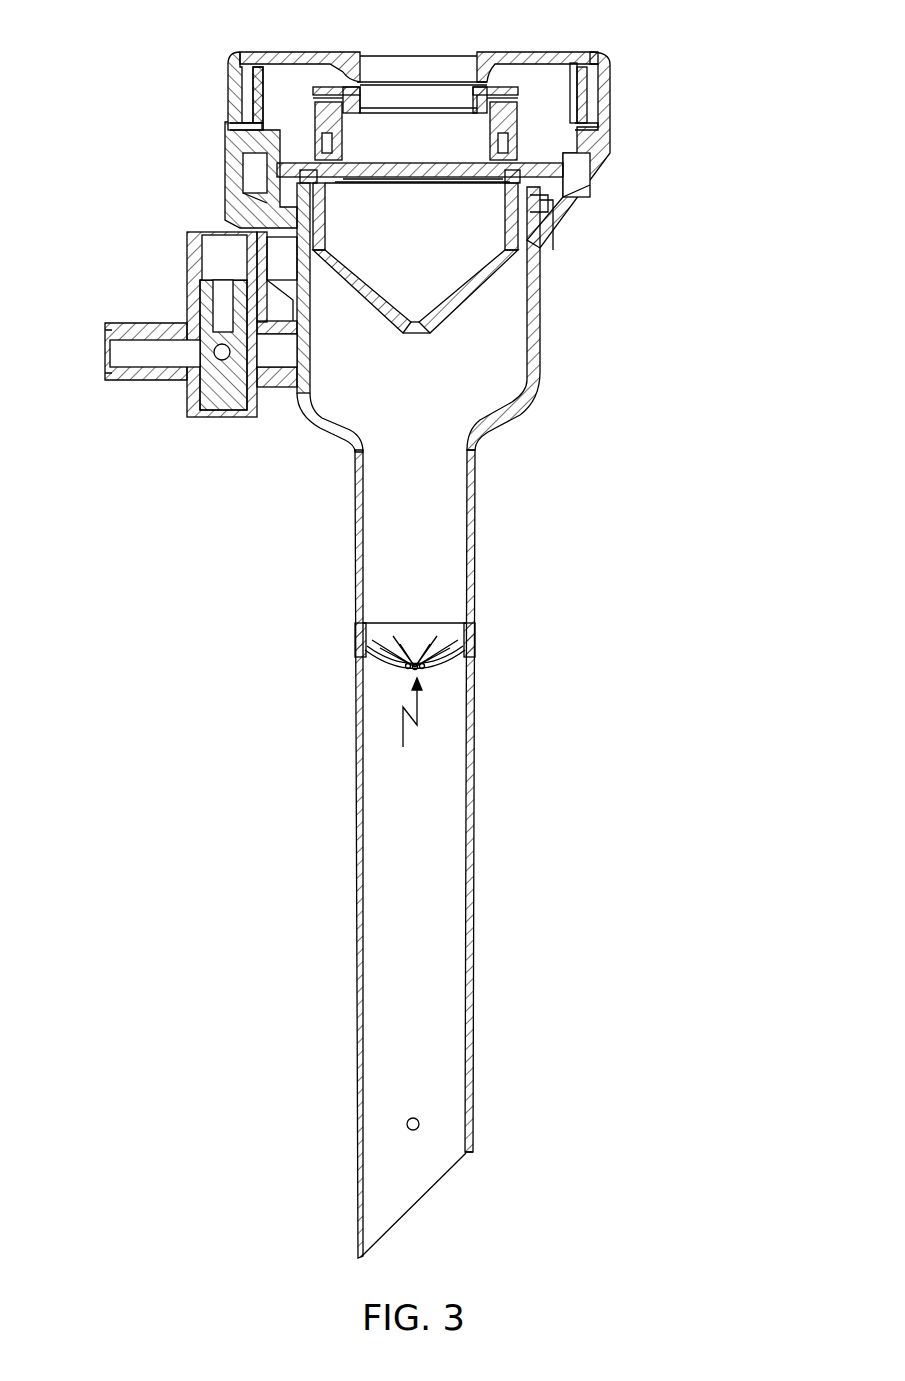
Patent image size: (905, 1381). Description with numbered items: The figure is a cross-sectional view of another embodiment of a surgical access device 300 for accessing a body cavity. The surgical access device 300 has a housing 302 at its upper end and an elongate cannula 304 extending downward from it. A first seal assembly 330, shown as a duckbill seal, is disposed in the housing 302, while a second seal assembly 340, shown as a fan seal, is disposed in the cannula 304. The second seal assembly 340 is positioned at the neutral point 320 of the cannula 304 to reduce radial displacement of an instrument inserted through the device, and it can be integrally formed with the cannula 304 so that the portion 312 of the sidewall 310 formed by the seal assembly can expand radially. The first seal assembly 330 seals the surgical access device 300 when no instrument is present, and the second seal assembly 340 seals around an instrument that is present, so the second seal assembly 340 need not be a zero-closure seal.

The surgical access device 300 is at (323, 630).
The housing 302 is at (540, 268).
The cannula 304 is at (481, 853).
The sidewall 310 is at (356, 947).
The portion of the sidewall 312 is at (476, 626).
The neutral point 320 is at (405, 730).
The first seal assembly 330 is at (387, 299).
The second seal assembly 340 is at (462, 648).